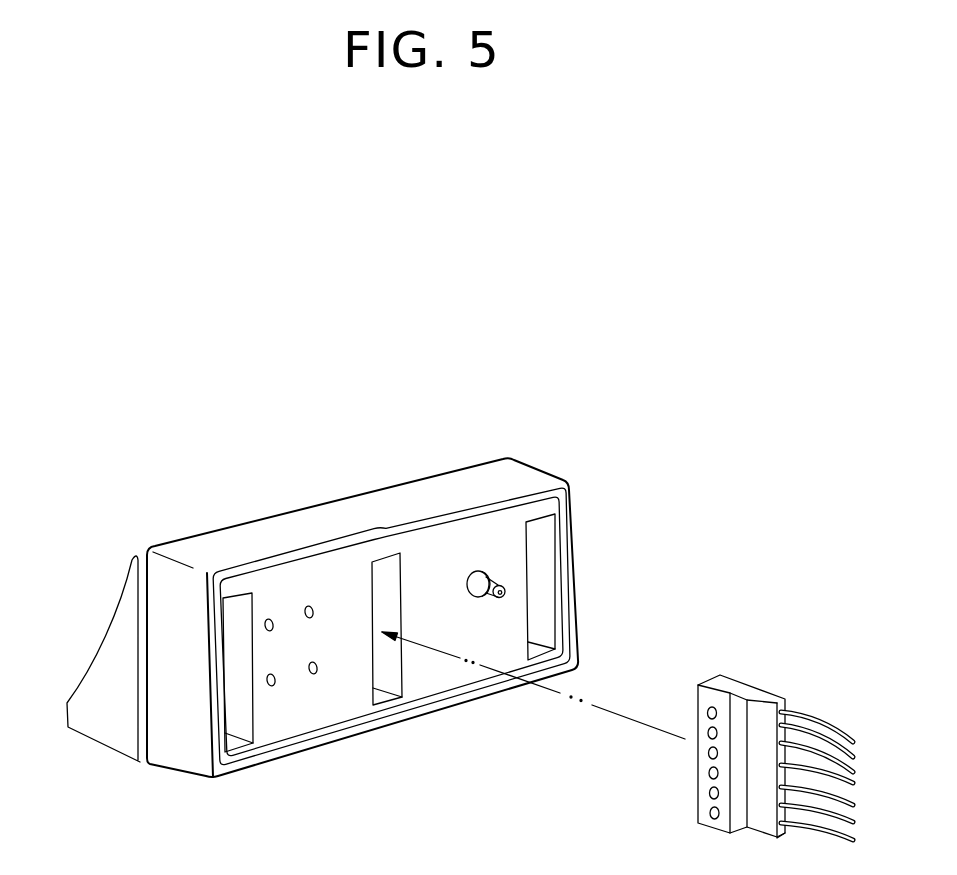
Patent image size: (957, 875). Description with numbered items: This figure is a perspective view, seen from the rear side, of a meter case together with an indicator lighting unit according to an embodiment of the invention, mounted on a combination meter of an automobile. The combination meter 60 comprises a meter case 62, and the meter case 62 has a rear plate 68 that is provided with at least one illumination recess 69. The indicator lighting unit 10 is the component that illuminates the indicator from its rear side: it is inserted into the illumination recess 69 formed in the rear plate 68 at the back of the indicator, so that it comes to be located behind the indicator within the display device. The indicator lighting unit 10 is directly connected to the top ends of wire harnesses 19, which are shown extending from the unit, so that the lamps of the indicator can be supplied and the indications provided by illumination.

The combination meter 60 is at (347, 448).
The meter case 62 is at (522, 473).
The rear plate 68 is at (453, 678).
The illumination recess 69 is at (385, 678).
The indicator lighting unit 10 is at (741, 632).
The wire harnesses 19 is at (822, 725).